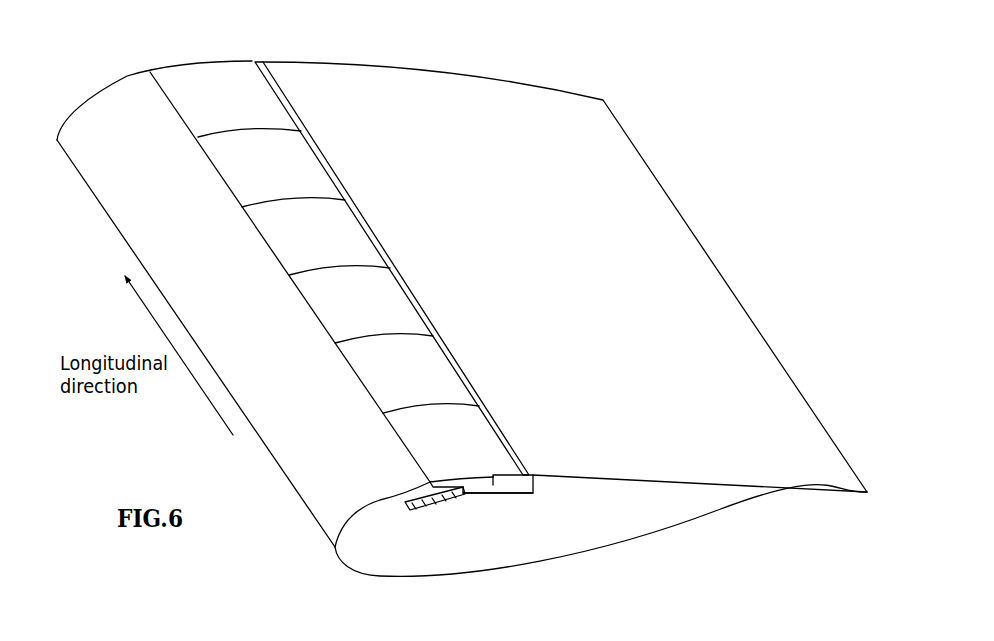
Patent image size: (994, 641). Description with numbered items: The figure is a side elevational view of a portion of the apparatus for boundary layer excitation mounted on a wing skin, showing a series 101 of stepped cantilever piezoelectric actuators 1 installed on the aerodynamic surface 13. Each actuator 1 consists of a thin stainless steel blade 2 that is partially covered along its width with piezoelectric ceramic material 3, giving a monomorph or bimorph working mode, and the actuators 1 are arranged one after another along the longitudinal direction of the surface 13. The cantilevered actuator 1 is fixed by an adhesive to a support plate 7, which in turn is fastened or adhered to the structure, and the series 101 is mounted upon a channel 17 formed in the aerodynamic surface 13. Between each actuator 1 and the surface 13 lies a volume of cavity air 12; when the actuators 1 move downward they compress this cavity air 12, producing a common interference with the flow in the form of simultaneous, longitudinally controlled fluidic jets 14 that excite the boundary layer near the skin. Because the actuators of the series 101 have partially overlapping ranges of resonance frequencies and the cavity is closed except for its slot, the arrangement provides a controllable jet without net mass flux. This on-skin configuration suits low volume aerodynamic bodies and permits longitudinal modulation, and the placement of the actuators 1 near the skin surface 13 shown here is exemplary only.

The stepped cantilever piezoelectric actuator 1 is at (236, 58).
The thin stainless steel blade 2 is at (215, 110).
The piezoelectric ceramic material 3 is at (433, 486).
The support plate 7 is at (400, 502).
The cavity air 12 is at (521, 483).
The aerodynamic surface 13 is at (98, 107).
The fluidic jet 14 is at (524, 470).
The channel 17 is at (500, 494).
The series of actuators 101 is at (510, 487).